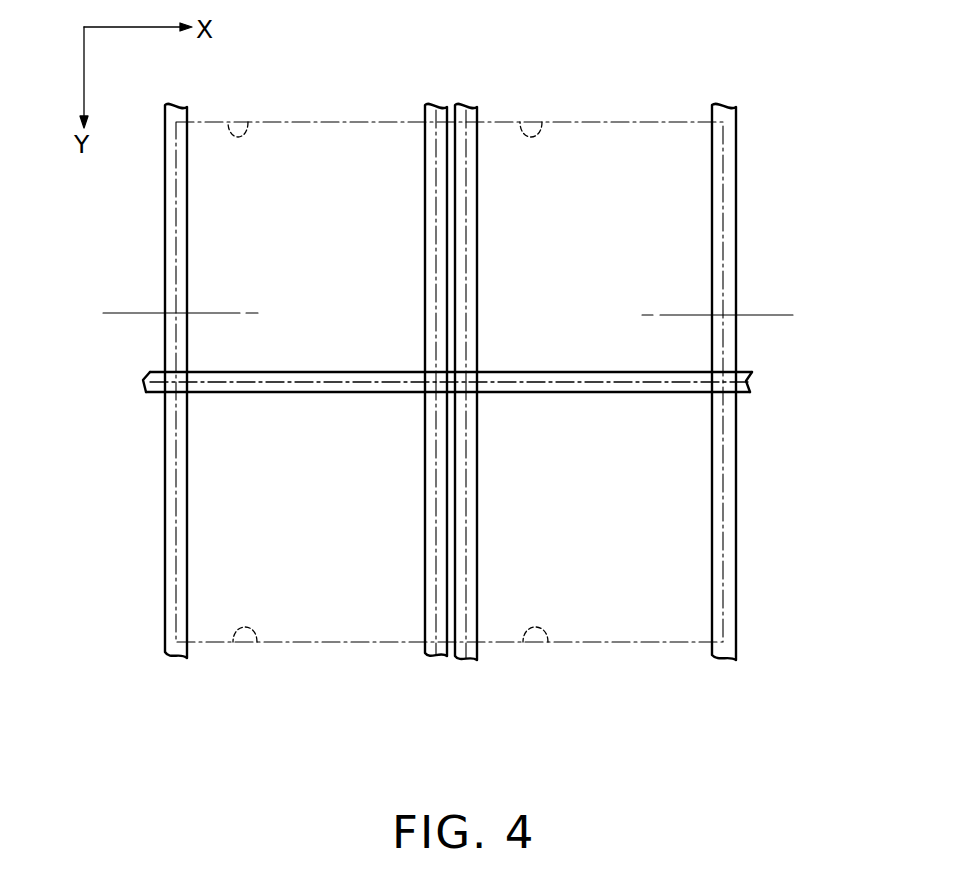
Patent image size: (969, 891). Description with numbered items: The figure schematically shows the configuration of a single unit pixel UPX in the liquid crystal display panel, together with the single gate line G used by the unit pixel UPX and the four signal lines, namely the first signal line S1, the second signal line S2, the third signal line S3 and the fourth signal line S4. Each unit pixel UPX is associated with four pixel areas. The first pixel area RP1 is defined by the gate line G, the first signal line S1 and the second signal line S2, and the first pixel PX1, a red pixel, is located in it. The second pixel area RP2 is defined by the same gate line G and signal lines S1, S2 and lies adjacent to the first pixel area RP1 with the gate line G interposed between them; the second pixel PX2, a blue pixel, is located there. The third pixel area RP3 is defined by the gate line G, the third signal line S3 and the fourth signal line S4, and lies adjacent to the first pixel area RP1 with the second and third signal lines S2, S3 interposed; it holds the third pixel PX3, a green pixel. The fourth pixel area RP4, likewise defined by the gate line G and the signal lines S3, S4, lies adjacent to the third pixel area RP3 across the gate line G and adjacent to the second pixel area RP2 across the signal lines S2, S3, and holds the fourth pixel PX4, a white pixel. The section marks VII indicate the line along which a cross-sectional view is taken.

The unit pixel UPX is at (745, 100).
The gate line G is at (752, 385).
The first signal line S1 is at (175, 651).
The second signal line S2 is at (433, 653).
The third signal line S3 is at (465, 659).
The fourth signal line S4 is at (722, 656).
The first pixel PX1 is at (345, 148).
The second pixel PX2 is at (333, 612).
The third pixel PX3 is at (637, 150).
The fourth pixel PX4 is at (642, 615).
The first pixel area RP1 is at (248, 122).
The second pixel area RP2 is at (257, 642).
The third pixel area RP3 is at (542, 122).
The fourth pixel area RP4 is at (548, 642).
The section line VII- VII is at (117, 323).